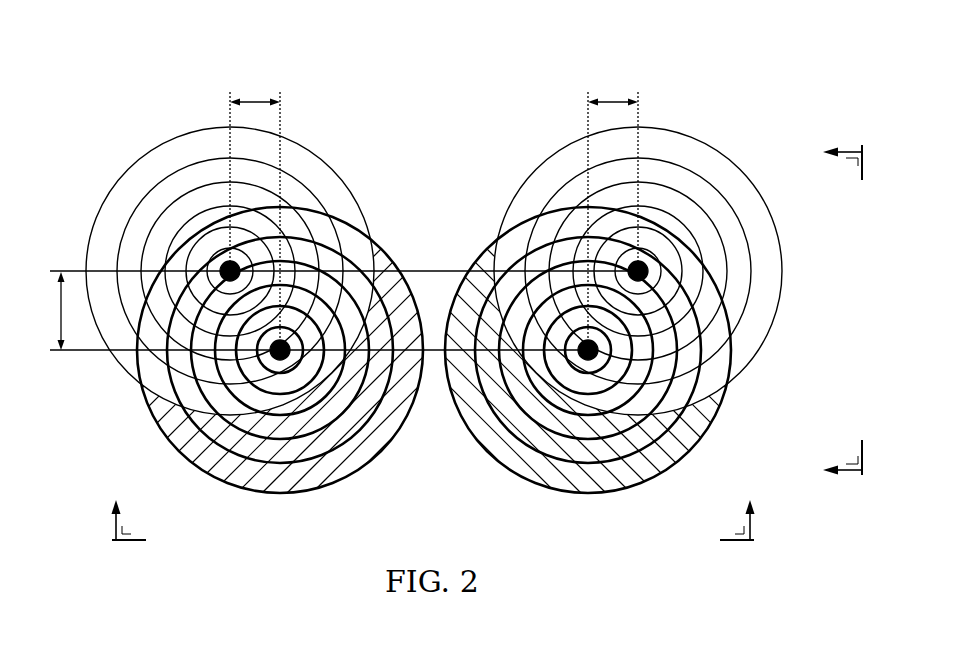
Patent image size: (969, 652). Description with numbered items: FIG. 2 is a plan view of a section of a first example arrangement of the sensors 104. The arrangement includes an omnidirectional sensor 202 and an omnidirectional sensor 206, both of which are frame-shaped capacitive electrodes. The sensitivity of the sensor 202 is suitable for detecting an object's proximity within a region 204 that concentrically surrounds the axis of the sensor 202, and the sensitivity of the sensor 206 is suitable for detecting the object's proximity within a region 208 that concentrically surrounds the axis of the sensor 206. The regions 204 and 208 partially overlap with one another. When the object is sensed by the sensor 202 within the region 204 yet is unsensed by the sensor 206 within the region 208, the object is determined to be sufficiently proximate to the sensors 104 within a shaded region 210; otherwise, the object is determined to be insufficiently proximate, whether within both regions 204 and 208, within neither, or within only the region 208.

The sensors 104 is at (346, 89).
The omnidirectional sensor 202 is at (281, 360).
The region 204 is at (214, 479).
The omnidirectional sensor 206 is at (222, 264).
The region 208 is at (160, 145).
The shaded region 210 is at (295, 453).